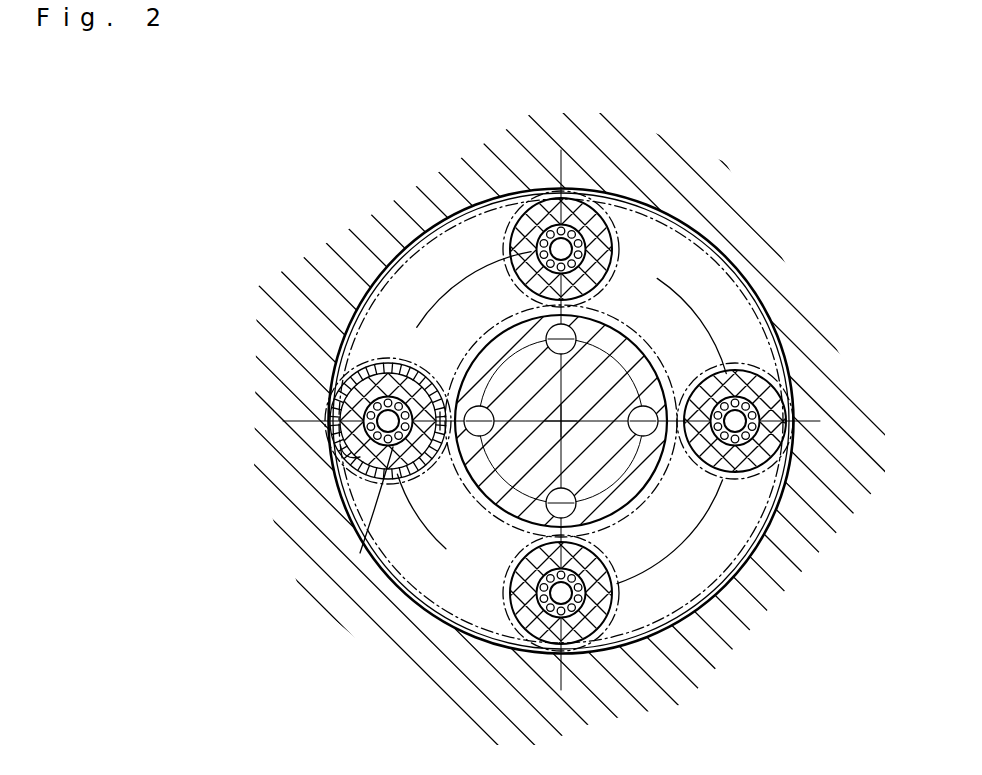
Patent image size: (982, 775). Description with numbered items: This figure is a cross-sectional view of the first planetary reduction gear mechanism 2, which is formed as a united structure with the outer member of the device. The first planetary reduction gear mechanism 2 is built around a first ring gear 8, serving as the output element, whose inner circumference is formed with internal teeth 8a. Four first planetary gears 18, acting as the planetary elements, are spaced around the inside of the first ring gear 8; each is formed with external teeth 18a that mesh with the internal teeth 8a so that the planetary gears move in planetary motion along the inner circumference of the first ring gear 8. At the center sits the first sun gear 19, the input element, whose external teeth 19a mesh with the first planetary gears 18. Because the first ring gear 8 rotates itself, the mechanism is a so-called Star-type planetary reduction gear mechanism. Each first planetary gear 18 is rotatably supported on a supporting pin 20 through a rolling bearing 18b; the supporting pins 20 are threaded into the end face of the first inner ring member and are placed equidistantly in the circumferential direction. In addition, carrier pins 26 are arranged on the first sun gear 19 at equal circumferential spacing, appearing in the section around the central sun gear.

The first planetary reduction gear mechanism 2 is at (316, 260).
The first ring gear 8 is at (747, 252).
The internal teeth 8a is at (345, 455).
The first planetary gear 18 is at (370, 469).
The external teeth 18a is at (365, 538).
The rolling bearing 18b is at (362, 427).
The first sun gear 19 is at (583, 443).
The external teeth 19a is at (443, 445).
The supporting pin 20 is at (392, 388).
The carrier pin 26 is at (528, 538).